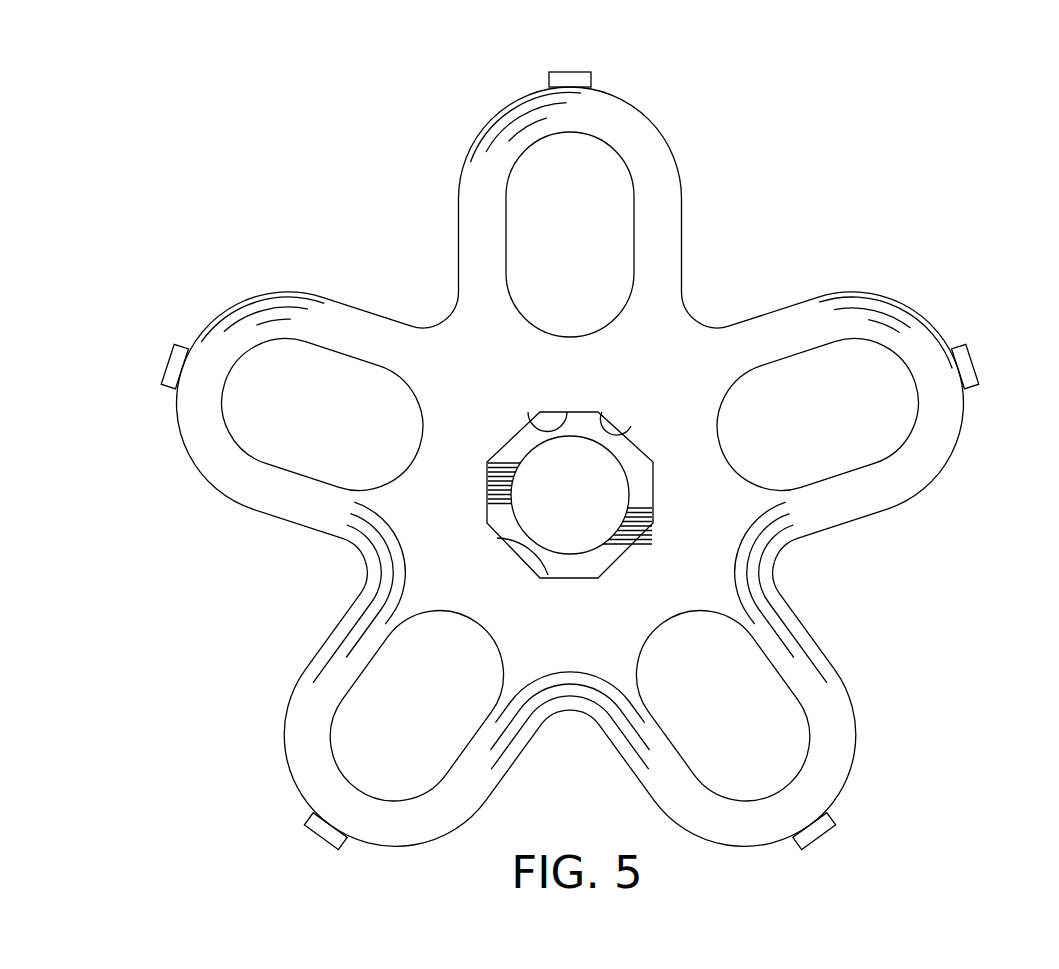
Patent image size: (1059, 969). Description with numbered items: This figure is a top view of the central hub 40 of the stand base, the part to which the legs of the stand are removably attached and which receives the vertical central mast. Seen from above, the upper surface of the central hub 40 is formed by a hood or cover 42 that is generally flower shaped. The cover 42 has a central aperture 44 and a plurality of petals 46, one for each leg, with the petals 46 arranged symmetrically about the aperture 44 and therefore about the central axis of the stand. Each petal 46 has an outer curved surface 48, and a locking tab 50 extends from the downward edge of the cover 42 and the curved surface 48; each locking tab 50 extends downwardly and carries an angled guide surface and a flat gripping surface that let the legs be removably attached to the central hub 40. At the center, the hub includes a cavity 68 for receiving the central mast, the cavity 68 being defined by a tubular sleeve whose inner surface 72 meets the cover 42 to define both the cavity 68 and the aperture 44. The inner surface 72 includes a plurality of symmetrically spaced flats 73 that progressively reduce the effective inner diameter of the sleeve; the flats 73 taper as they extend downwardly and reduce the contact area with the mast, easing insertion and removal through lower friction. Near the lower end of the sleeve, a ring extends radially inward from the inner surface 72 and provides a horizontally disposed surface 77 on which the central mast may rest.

The central hub 40 is at (205, 210).
The cover 42 is at (447, 376).
The central aperture 44 is at (565, 570).
The petals 46 is at (527, 178).
The outer curved surface 48 is at (613, 92).
The locking tab 50 is at (567, 71).
The cavity 68 is at (555, 509).
The inner surface 72 is at (605, 420).
The flats 73 is at (533, 427).
The horizontally disposed surface 77 is at (645, 478).